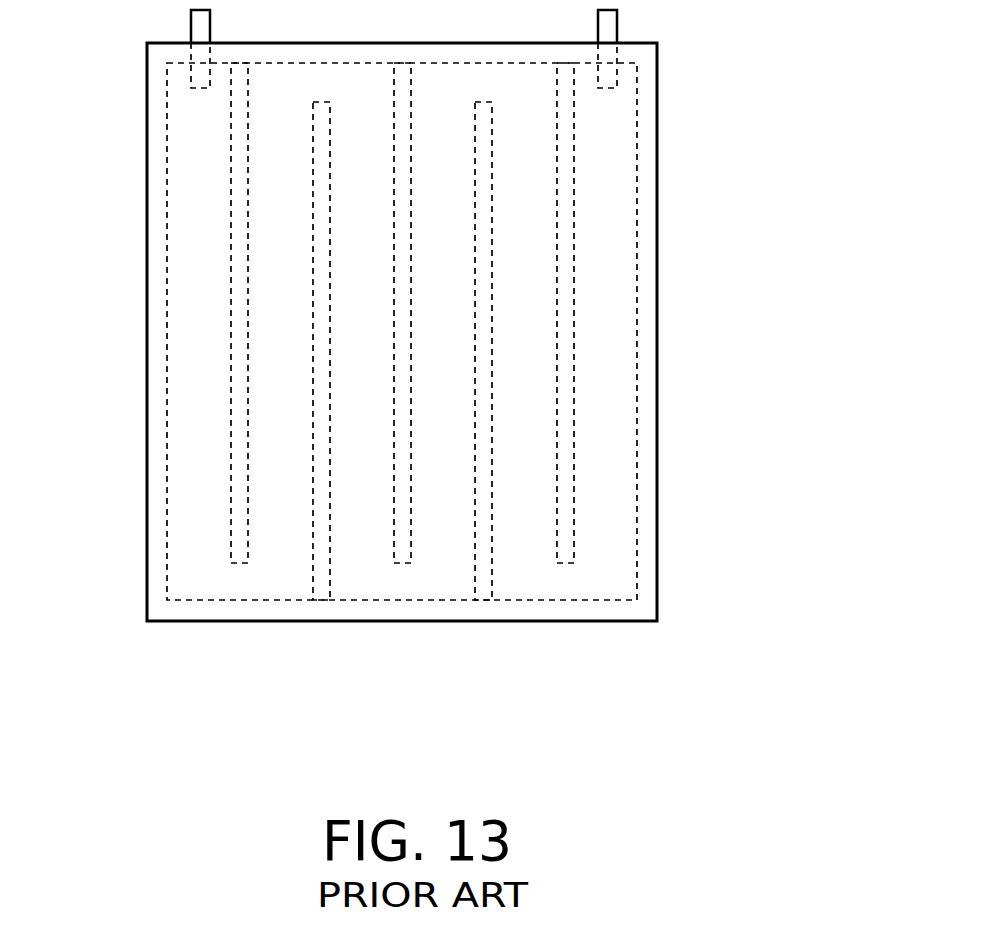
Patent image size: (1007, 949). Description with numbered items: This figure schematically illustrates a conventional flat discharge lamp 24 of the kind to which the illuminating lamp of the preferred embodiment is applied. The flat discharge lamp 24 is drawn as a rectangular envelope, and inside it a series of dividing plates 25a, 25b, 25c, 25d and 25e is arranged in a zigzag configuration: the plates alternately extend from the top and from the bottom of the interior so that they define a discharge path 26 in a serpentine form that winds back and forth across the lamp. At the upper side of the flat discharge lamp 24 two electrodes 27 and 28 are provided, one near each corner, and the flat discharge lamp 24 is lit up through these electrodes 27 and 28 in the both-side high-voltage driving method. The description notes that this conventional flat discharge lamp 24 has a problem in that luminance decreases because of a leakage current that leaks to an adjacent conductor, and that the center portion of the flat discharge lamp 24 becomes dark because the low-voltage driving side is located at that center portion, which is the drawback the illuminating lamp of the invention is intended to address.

The flat discharge lamp 24 is at (732, 160).
The dividing plate 25a is at (231, 243).
The dividing plate 25b is at (313, 310).
The dividing plate 25c is at (393, 385).
The dividing plate 25d is at (492, 232).
The dividing plate 25e is at (574, 310).
The discharge path 26 is at (360, 550).
The electrode 27 is at (185, 70).
The electrode 28 is at (640, 70).